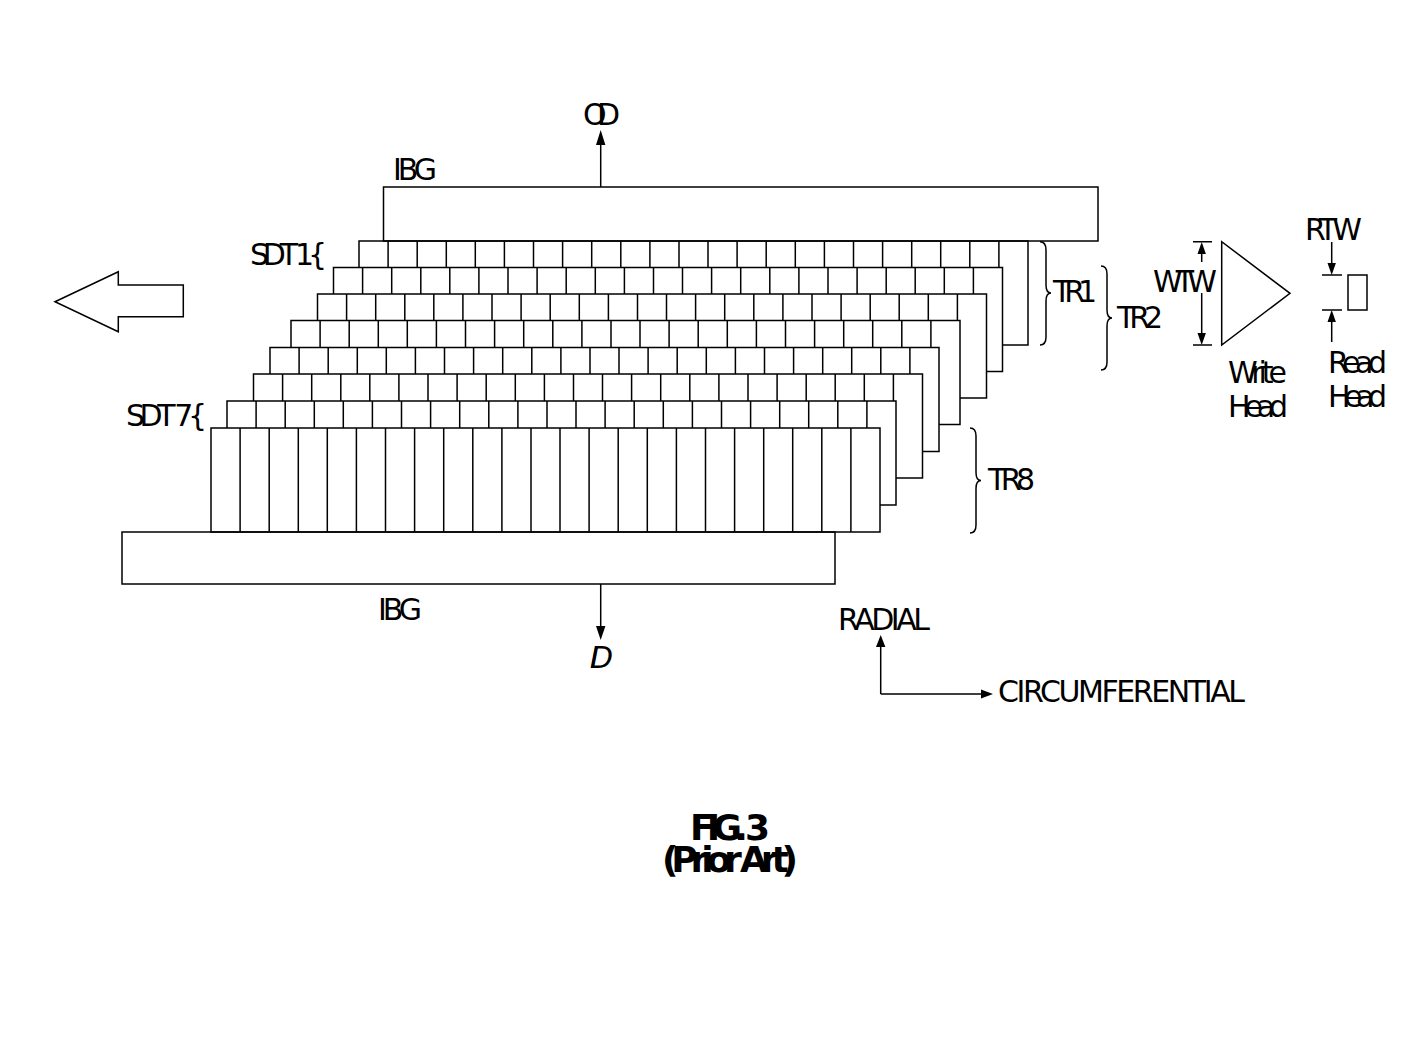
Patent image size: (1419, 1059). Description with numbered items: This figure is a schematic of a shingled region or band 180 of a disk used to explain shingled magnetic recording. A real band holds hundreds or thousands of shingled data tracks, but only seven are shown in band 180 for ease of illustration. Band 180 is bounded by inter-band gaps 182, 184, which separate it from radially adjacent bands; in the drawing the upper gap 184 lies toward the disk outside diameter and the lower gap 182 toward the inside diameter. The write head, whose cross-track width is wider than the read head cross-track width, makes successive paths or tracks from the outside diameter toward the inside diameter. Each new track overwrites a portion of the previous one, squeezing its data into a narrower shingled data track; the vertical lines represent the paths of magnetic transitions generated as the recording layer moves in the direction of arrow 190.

The shingled region or band 180 is at (295, 72).
The inter-band gap 182 is at (675, 575).
The inter-band gap 184 is at (923, 200).
The arrow 190 is at (138, 285).